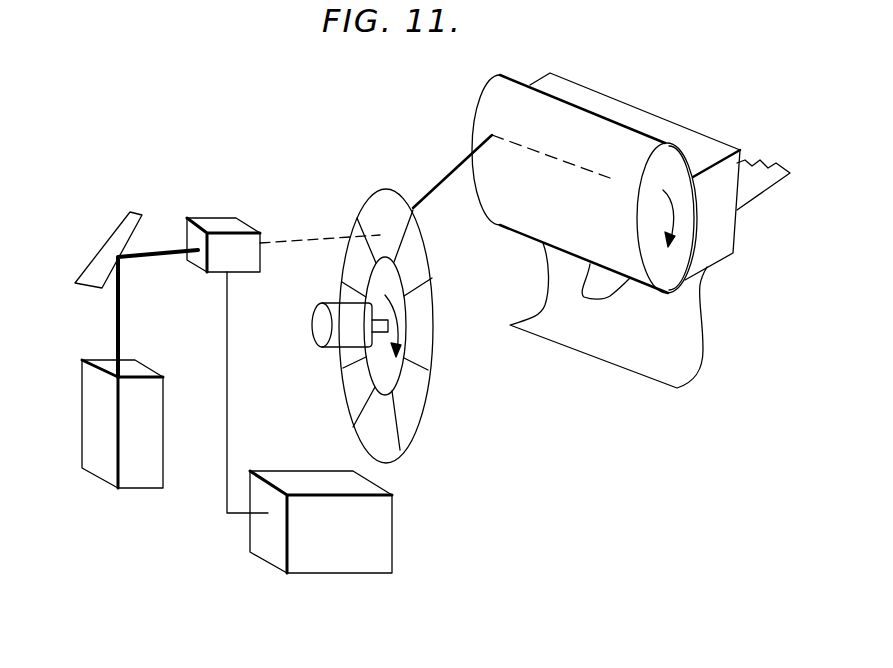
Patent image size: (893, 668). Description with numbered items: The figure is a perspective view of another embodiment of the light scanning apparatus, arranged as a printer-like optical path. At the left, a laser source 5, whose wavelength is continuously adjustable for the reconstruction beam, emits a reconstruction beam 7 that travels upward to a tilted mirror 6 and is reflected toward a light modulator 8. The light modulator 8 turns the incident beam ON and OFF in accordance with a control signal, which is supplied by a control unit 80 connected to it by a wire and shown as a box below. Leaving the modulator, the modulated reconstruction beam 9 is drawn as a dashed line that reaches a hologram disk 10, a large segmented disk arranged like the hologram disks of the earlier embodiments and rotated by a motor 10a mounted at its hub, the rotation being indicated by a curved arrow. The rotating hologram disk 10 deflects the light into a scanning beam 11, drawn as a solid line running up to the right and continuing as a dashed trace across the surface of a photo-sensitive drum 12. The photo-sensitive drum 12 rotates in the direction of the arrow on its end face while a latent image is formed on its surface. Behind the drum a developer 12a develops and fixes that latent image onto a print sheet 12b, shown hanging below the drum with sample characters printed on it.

The laser source 5 is at (97, 472).
The mirror 6 is at (121, 222).
The reconstruction beam 7 is at (119, 320).
The light modulator 8 is at (218, 202).
The modulated reconstruction beam 9 is at (297, 232).
The hologram disk 10 is at (382, 197).
The motor 10a is at (336, 348).
The scanning beam 11 is at (448, 175).
The photo-sensitive drum 12 is at (490, 90).
The developer 12a is at (678, 124).
The print sheet 12b is at (705, 358).
The control unit 80 is at (332, 568).